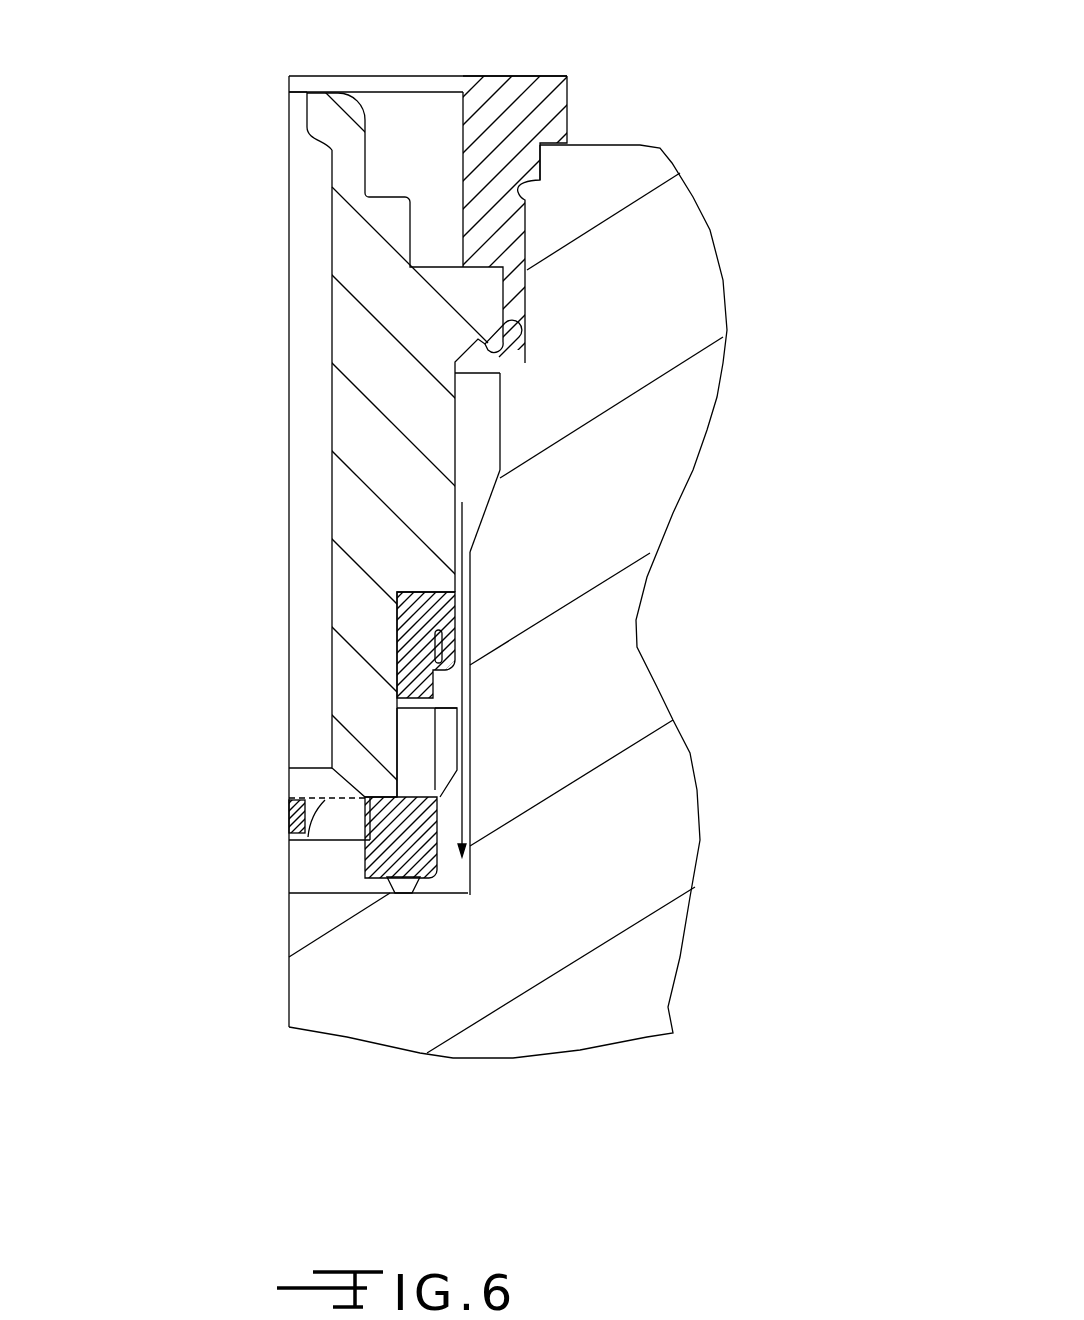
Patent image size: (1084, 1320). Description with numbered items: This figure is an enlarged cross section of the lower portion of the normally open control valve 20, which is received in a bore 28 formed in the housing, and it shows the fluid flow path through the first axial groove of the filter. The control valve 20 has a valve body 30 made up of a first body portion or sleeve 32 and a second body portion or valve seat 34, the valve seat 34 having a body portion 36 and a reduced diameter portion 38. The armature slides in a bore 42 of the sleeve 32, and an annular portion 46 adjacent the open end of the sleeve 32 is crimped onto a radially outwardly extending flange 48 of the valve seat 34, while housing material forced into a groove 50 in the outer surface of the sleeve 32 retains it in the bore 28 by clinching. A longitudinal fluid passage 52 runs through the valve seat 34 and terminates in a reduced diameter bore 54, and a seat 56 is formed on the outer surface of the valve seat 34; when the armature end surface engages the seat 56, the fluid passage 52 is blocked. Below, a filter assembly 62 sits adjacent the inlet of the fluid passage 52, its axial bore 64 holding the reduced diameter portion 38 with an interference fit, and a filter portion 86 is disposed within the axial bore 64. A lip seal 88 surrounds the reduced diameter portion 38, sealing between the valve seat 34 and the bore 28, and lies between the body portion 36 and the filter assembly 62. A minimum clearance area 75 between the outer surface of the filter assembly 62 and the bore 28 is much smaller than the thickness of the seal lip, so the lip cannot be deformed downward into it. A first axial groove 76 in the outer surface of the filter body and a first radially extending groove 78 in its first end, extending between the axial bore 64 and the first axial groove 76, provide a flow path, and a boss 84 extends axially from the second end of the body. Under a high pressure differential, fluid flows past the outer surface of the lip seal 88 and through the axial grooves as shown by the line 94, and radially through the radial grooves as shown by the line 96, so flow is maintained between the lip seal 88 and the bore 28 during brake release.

The control valve 20 is at (210, 53).
The bore 28 is at (356, 883).
The valve body 30 is at (543, 320).
The sleeve 32 is at (567, 77).
The valve seat 34 is at (473, 436).
The body portion 36 is at (457, 405).
The reduced diameter portion 38 is at (350, 675).
The bore 42 is at (463, 120).
The annular portion 46 is at (460, 362).
The flange 48 is at (478, 313).
The groove 50 is at (518, 197).
The fluid passage 52 is at (330, 598).
The reduced diameter bore 54 is at (307, 108).
The seat 56 is at (334, 76).
The filter assembly 62 is at (313, 852).
The axial bore 64 is at (397, 769).
The minimum clearance area 75 is at (460, 718).
The first axial groove 76 is at (436, 762).
The first radially extending groove 78 is at (413, 762).
The boss 84 is at (407, 892).
The filter portion 86 is at (310, 842).
The lip seal 88 is at (415, 592).
The line 94 is at (465, 513).
The line 96 is at (437, 890).